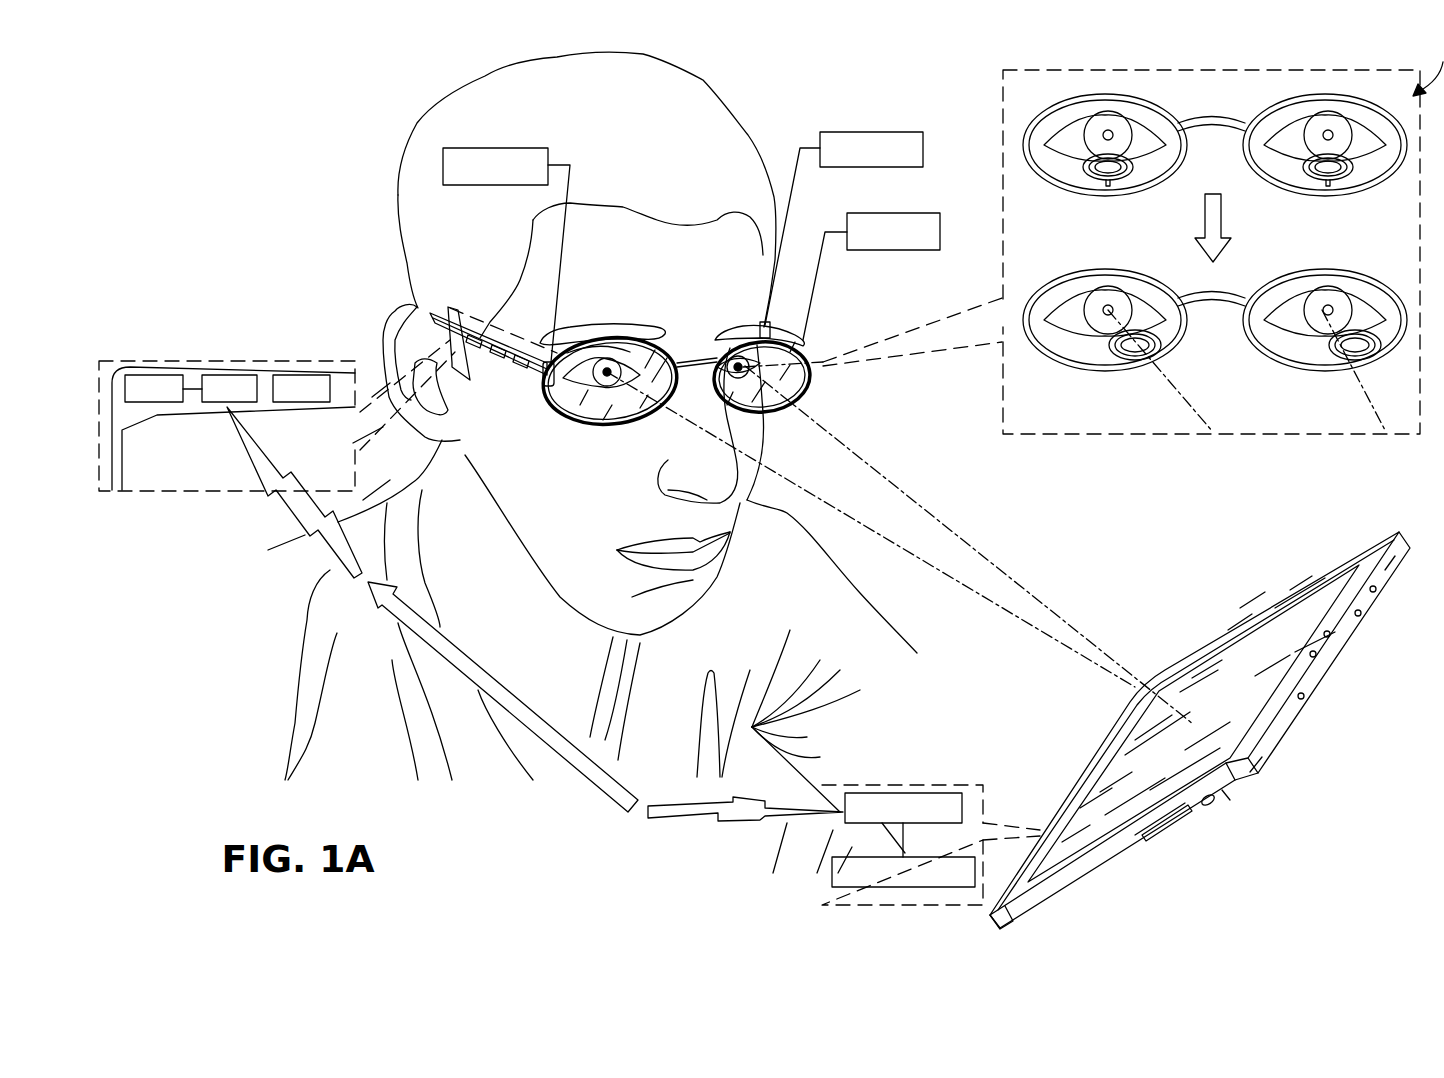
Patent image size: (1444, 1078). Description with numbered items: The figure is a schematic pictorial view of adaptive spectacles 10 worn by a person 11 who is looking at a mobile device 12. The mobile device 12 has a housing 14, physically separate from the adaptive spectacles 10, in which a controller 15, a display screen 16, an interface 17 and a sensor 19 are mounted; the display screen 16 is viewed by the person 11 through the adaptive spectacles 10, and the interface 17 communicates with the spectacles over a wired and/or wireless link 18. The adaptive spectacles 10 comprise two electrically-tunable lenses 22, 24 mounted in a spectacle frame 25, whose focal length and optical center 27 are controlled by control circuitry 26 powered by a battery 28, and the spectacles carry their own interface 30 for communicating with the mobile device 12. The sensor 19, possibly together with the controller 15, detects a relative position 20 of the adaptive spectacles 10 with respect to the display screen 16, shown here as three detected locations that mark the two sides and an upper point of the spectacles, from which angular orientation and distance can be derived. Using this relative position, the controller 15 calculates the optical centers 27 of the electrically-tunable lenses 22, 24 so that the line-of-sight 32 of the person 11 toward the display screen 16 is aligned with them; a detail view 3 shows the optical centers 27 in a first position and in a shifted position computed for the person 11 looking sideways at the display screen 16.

The eye tracking inset 3 is at (1400, 360).
The adaptive spectacles 10 is at (838, 312).
The person 11 is at (407, 253).
The mobile device 12 is at (1372, 636).
The housing 14 is at (1277, 742).
The controller 15 is at (832, 872).
The display screen 16 is at (1252, 642).
The interface 17 is at (915, 793).
The wired and/or wireless link 18 is at (490, 672).
The sensor 19 is at (1328, 648).
The relative position 20 is at (491, 148).
The electrically-tunable lens 22 is at (590, 418).
The electrically-tunable lens 24 is at (795, 390).
The spectacle frame 25 is at (537, 400).
The control circuitry 26 is at (161, 374).
The optical center 27 is at (1110, 172).
The battery 28 is at (302, 374).
The interface 30 is at (233, 374).
The line-of-sight 32 is at (946, 528).